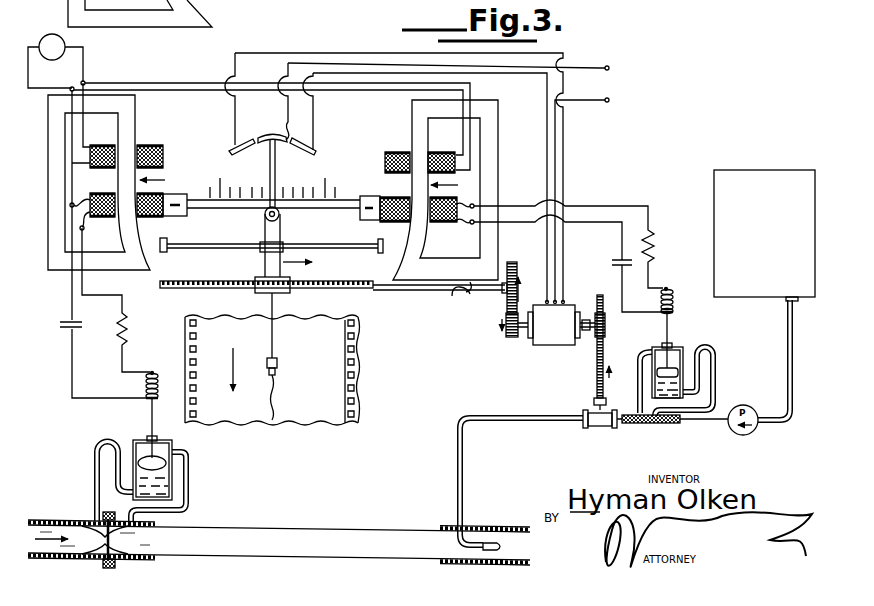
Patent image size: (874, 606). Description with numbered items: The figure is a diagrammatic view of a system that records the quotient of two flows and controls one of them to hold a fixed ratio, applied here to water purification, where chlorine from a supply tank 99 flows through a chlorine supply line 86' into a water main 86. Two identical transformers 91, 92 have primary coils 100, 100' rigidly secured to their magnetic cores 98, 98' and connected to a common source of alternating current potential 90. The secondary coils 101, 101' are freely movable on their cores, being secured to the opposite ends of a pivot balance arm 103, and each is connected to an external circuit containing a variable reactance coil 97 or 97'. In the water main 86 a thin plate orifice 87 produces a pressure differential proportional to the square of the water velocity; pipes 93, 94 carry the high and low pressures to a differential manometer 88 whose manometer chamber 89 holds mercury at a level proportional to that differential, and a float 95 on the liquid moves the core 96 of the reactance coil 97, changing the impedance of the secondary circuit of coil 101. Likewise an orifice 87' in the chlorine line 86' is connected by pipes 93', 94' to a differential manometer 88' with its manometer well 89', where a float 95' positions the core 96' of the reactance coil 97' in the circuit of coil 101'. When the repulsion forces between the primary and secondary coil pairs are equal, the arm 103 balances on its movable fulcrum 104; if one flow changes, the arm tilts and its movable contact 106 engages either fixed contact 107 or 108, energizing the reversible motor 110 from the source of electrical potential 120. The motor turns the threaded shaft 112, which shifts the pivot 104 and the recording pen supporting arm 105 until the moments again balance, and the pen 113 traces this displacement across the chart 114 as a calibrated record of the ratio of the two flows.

The water main 86 is at (279, 536).
The chlorine supply line 86' is at (594, 482).
The thin plate orifice 87 is at (107, 530).
The orifice 87' is at (615, 426).
The differential manometer 88 is at (184, 470).
The differential manometer 88' is at (646, 371).
The manometer chamber 89 is at (138, 427).
The manometer well 89' is at (650, 335).
The source of alternating current potential 90 is at (66, 43).
The transformer 91 is at (161, 181).
The transformer 92 is at (454, 186).
The pipe 93 is at (92, 482).
The pipe 93' is at (698, 381).
The pipe 94 is at (175, 486).
The pipe 94' is at (632, 382).
The float 95 is at (168, 448).
The float 95' is at (684, 351).
The core 96 is at (132, 388).
The core 96' is at (689, 313).
The variable reactance coil 97 is at (154, 371).
The variable reactance coil 97' is at (678, 286).
The magnetic core 98 is at (110, 182).
The magnetic core 98' is at (462, 190).
The supply tank 99 is at (744, 185).
The primary coil 100 is at (135, 125).
The primary coil 100' is at (407, 151).
The secondary coil 101 is at (128, 214).
The secondary coil 101' is at (411, 217).
The pivot balance arm 103 is at (226, 208).
The movable fulcrum 104 is at (280, 215).
The recording pen supporting arm 105 is at (268, 304).
The movable contact 106 is at (268, 136).
The fixed contact 107 is at (229, 153).
The fixed contact 108 is at (315, 152).
The reversible motor 110 is at (552, 340).
The threaded shaft 112 is at (383, 290).
The pen 113 is at (278, 363).
The chart 114 is at (340, 386).
The source of electrical potential 120 is at (605, 82).